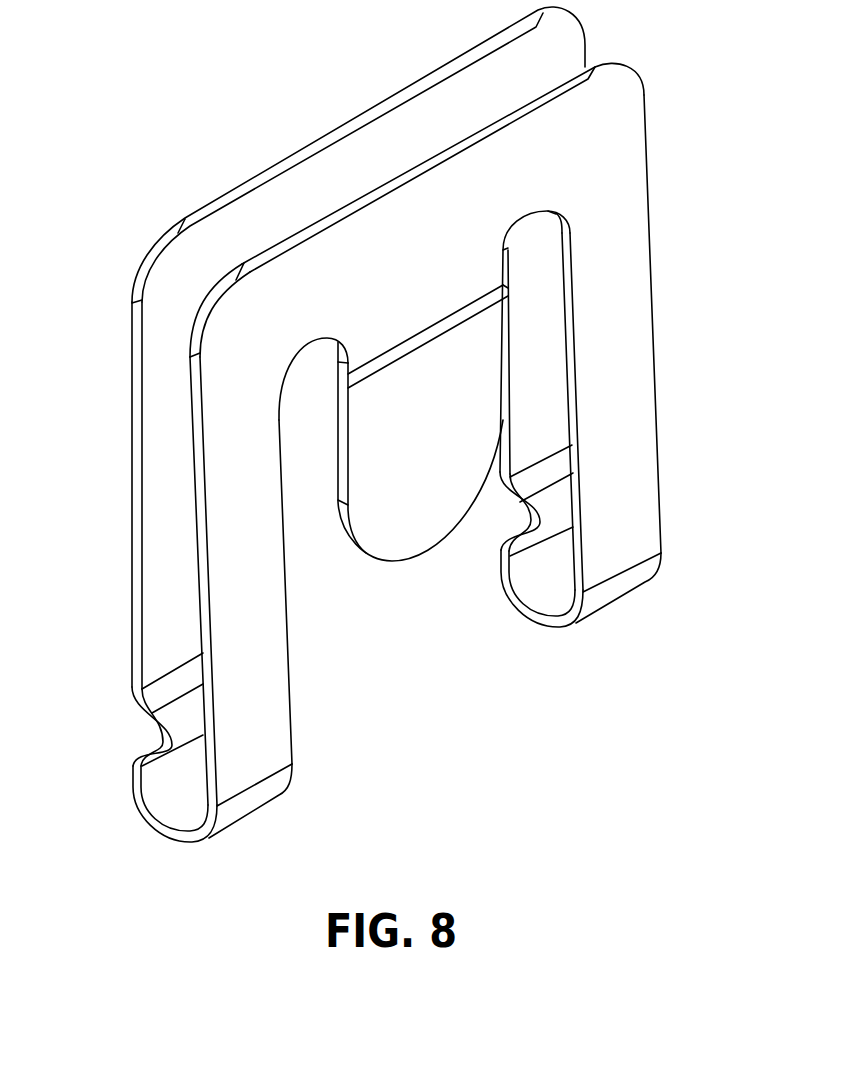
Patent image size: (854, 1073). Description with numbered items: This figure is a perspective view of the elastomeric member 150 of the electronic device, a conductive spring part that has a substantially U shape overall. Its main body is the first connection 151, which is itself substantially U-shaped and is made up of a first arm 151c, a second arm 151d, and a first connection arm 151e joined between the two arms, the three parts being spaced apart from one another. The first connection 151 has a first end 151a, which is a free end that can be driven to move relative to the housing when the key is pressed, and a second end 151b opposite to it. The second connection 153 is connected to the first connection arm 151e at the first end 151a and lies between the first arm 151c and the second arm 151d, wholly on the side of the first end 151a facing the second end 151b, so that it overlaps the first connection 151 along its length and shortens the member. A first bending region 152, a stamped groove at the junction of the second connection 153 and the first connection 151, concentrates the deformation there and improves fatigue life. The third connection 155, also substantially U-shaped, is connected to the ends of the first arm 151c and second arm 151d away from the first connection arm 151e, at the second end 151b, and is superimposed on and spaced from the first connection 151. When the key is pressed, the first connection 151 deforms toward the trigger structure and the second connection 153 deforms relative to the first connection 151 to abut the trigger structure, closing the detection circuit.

The elastomeric member 150 is at (394, 424).
The first connection 151 is at (224, 553).
The first end 151a is at (227, 324).
The second end 151b is at (250, 773).
The first arm 151c is at (217, 690).
The second arm 151d is at (623, 490).
The first connection arm 151e is at (472, 212).
The first bending region 152 is at (443, 323).
The second connection 153 is at (428, 518).
The third connection 155 is at (415, 121).